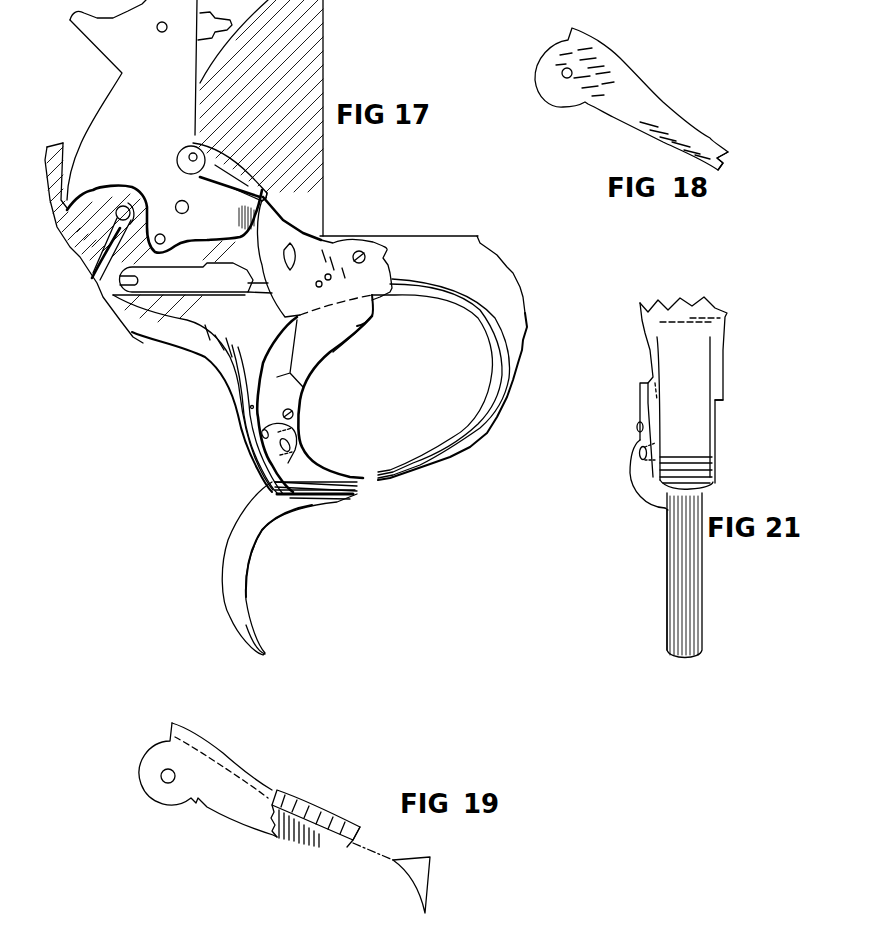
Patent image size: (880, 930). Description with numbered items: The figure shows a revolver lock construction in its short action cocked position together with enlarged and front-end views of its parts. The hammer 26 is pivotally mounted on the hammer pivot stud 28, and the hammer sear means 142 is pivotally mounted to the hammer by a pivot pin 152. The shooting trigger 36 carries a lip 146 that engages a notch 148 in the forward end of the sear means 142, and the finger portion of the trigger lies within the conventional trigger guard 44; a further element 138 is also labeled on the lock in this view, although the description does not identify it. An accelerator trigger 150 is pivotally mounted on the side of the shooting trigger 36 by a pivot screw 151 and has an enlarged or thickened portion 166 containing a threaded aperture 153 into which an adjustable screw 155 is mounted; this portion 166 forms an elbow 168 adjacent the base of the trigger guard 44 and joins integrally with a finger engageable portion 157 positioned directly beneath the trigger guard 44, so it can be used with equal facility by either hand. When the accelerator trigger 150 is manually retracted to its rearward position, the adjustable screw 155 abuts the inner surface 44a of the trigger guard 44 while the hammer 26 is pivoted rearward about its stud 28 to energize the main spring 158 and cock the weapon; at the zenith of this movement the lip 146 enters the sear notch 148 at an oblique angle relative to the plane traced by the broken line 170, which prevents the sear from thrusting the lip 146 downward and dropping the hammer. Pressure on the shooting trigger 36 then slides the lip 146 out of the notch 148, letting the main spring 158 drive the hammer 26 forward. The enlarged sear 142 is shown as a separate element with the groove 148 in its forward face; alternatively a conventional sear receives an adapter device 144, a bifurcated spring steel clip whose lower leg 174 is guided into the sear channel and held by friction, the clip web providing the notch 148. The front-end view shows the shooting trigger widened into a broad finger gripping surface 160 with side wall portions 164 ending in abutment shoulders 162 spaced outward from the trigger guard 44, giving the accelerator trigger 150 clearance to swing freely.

In FIG. 17, the hammer 26 is at (110, 97).
In FIG. 17, the hammer pivot stud 28 is at (178, 203).
In FIG. 17, the shooting trigger 36 is at (374, 314).
In FIG. 17, the trigger guard 44 is at (447, 460).
In FIG. 21, the trigger guard 44 is at (712, 462).
In FIG. 17, the inner surface of the trigger guard 44a is at (250, 407).
In FIG. 17, the rebound lever 138 is at (363, 255).
In FIG. 17, the hammer sear means 142 is at (226, 148).
In FIG. 18, the hammer sear means 142 is at (662, 107).
In FIG. 19, the hammer sear means 142 is at (253, 767).
In FIG. 19, the adapter device 144 is at (300, 793).
In FIG. 17, the lip 146 is at (265, 196).
In FIG. 19, the lip 146 is at (400, 867).
In FIG. 17, the notch 148 is at (268, 192).
In FIG. 18, the notch 148 is at (721, 160).
In FIG. 19, the notch 148 is at (363, 835).
In FIG. 17, the accelerator trigger 150 is at (263, 555).
In FIG. 21, the accelerator trigger 150 is at (657, 593).
In FIG. 17, the pivot screw 151 is at (300, 414).
In FIG. 21, the pivot screw 151 is at (637, 427).
In FIG. 17, the pivot pin 152 is at (192, 154).
In FIG. 17, the threaded aperture 153 is at (282, 452).
In FIG. 21, the threaded aperture 153 is at (640, 460).
In FIG. 17, the adjustable screw 155 is at (261, 437).
In FIG. 17, the finger engageable portion 157 is at (264, 646).
In FIG. 21, the finger engageable portion 157 is at (703, 614).
In FIG. 17, the main spring 158 is at (88, 272).
In FIG. 17, the finger gripping surface 160 is at (333, 352).
In FIG. 21, the finger gripping surface 160 is at (722, 386).
In FIG. 17, the abutment shoulders 162 is at (300, 384).
In FIG. 21, the abutment shoulders 162 is at (717, 401).
In FIG. 17, the side wall portions 164 is at (352, 338).
In FIG. 17, the enlarged or thickened portion 166 is at (314, 461).
In FIG. 21, the enlarged or thickened portion 166 is at (630, 485).
In FIG. 21, the elbow 168 is at (657, 507).
In FIG. 17, the broken line 170 is at (305, 225).
In FIG. 19, the lower leg 174 is at (337, 817).